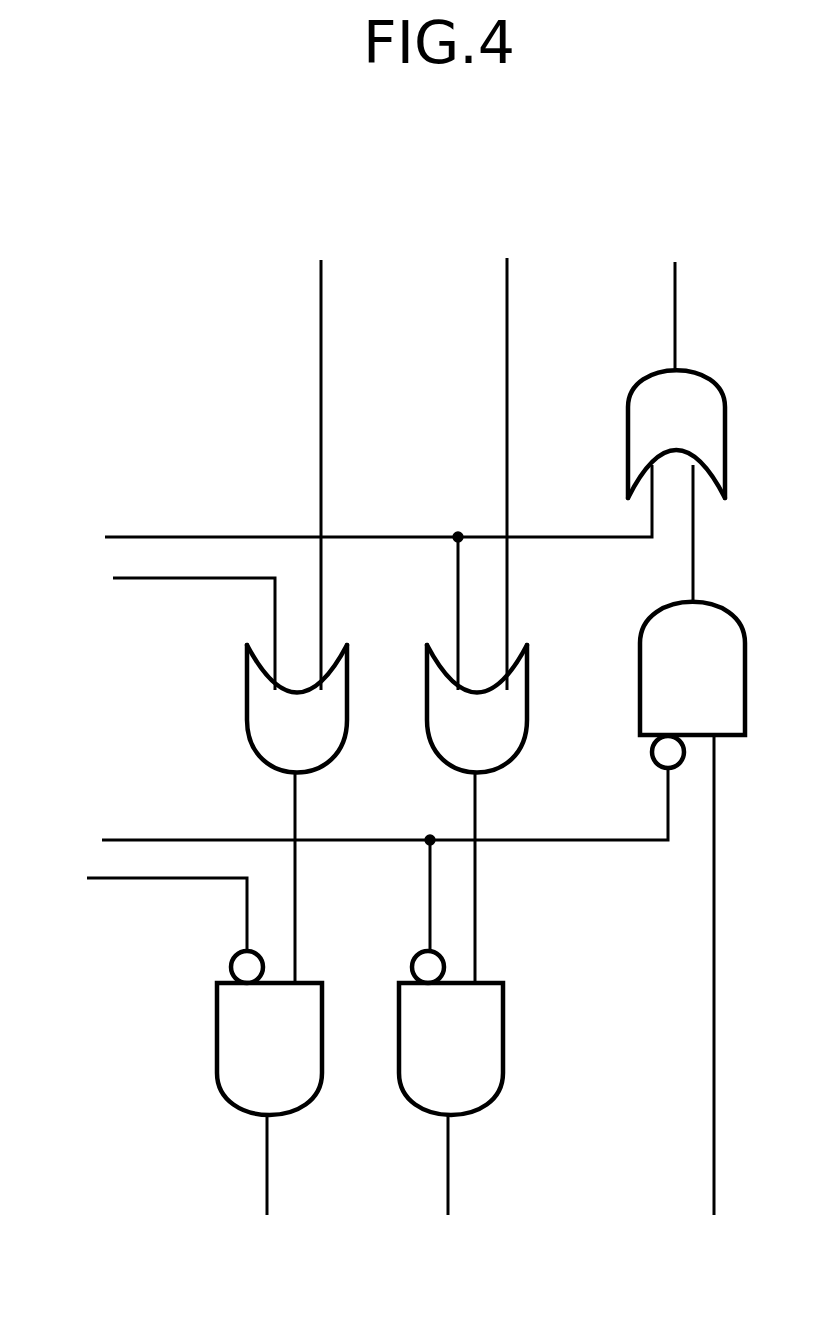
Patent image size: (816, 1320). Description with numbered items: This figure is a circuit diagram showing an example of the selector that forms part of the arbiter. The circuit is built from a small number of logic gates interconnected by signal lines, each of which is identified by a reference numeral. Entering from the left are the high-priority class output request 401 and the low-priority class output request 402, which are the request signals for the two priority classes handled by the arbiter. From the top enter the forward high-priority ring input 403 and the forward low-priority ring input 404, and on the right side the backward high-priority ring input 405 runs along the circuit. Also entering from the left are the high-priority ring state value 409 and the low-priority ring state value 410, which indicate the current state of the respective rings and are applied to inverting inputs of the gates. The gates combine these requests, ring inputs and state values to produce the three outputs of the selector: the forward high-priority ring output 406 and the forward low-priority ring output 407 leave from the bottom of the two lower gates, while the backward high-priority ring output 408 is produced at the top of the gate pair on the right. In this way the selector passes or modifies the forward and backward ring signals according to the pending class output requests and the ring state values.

The high-priority class output request 401 is at (157, 534).
The low-priority class output request 402 is at (148, 582).
The forward high-priority ring input 403 is at (552, 290).
The forward low-priority ring input 404 is at (367, 290).
The backward high-priority ring input 405 is at (710, 1193).
The forward high-priority ring output 406 is at (445, 1193).
The forward low-priority ring output 407 is at (265, 1192).
The backward high-priority ring output 408 is at (675, 312).
The high-priority ring state value 409 is at (154, 836).
The low-priority ring state value 410 is at (145, 881).